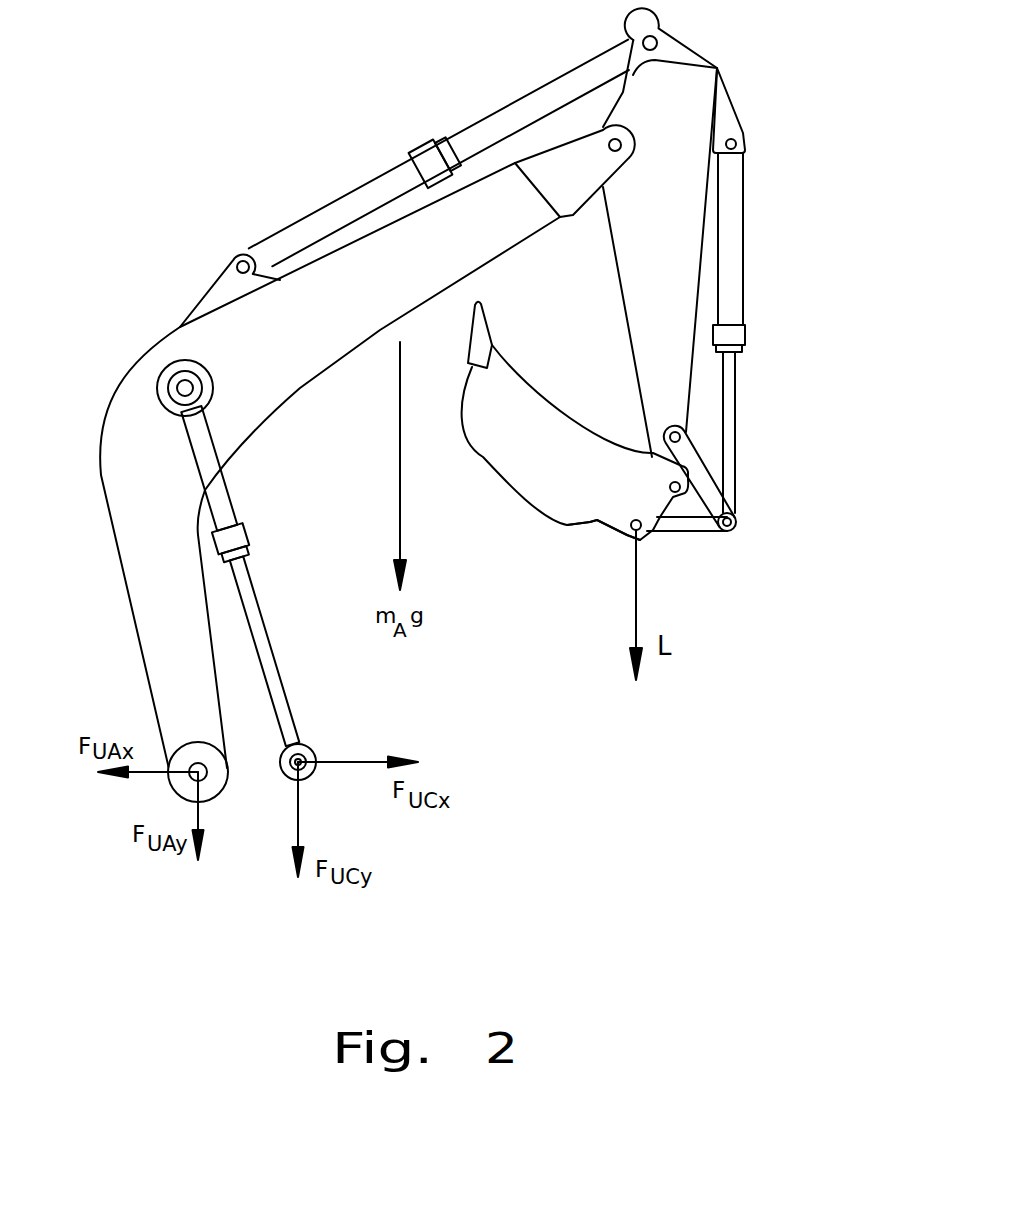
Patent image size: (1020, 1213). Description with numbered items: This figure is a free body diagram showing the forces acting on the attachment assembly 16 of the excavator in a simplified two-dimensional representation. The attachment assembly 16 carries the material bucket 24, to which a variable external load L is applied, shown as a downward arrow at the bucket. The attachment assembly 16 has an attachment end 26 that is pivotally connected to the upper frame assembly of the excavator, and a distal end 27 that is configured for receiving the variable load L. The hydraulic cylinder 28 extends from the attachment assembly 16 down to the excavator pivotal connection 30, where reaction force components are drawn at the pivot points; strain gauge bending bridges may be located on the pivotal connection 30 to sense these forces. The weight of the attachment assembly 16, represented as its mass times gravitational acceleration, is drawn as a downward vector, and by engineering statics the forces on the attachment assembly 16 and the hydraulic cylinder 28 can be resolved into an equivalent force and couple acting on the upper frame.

The attachment assembly 16 is at (212, 168).
The material bucket 24 is at (502, 495).
The attachment end 26 is at (234, 826).
The distal end 27 is at (584, 563).
The hydraulic cylinder 28 is at (257, 607).
The pivotal connection 30 is at (207, 775).